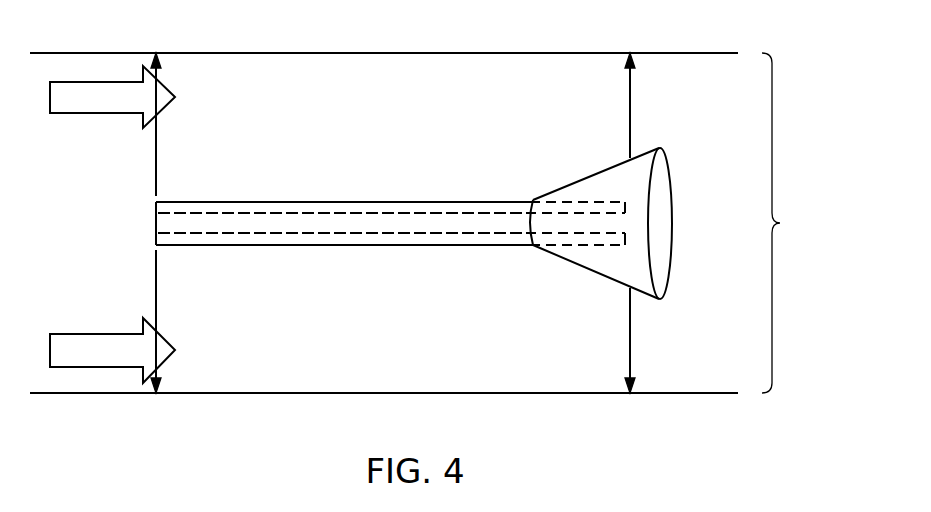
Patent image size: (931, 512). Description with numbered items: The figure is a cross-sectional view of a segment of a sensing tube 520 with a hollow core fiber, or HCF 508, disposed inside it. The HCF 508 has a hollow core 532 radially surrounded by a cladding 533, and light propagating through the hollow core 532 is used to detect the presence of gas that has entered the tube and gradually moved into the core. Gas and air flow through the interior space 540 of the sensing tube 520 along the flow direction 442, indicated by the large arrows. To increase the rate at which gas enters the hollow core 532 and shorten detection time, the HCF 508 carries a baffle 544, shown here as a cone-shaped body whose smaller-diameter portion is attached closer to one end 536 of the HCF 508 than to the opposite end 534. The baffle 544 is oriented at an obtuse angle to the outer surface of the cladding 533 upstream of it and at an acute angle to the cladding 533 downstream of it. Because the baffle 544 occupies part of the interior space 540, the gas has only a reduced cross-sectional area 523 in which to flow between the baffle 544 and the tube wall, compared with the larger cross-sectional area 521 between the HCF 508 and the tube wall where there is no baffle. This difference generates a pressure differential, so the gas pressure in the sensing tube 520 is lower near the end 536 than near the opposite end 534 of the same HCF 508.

The flow direction 442 is at (98, 105).
The cross-sectional area 521 is at (160, 155).
The reduced cross-sectional area 523 is at (632, 108).
The interior space 540 is at (377, 118).
The hollow core fiber 508 is at (402, 248).
The cladding 533 is at (295, 206).
The hollow core 532 is at (384, 226).
The baffle 544 is at (606, 165).
The end 536 is at (633, 206).
The opposite end 534 is at (147, 209).
The sensing tube 520 is at (796, 223).